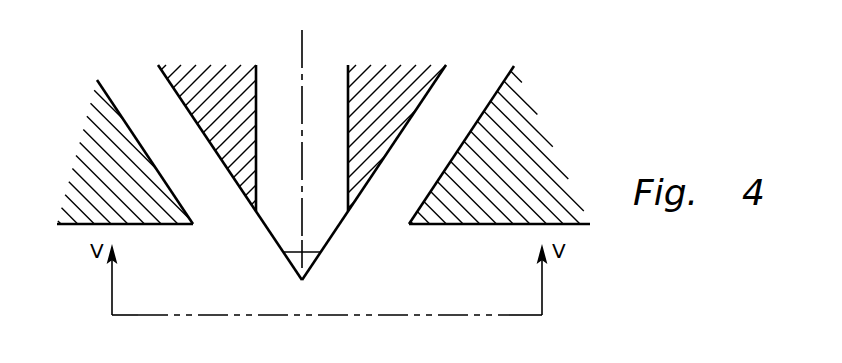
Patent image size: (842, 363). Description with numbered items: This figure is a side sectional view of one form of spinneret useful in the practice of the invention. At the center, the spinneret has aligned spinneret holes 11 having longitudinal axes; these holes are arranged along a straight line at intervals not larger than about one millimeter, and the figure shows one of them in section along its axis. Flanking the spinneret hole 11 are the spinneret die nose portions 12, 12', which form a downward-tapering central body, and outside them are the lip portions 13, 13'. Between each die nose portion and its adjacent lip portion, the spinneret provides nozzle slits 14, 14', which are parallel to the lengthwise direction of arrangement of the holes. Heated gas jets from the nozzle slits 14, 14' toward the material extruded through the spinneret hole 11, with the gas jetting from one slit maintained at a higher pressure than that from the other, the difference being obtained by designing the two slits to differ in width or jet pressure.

The spinneret hole 11 is at (323, 78).
The spinneret die nose portion 12 is at (374, 152).
The spinneret die nose portion 12' is at (230, 151).
The lip portion 13 is at (499, 147).
The lip portion 13' is at (112, 157).
The nozzle slit 14 is at (462, 127).
The nozzle slit 14' is at (145, 131).